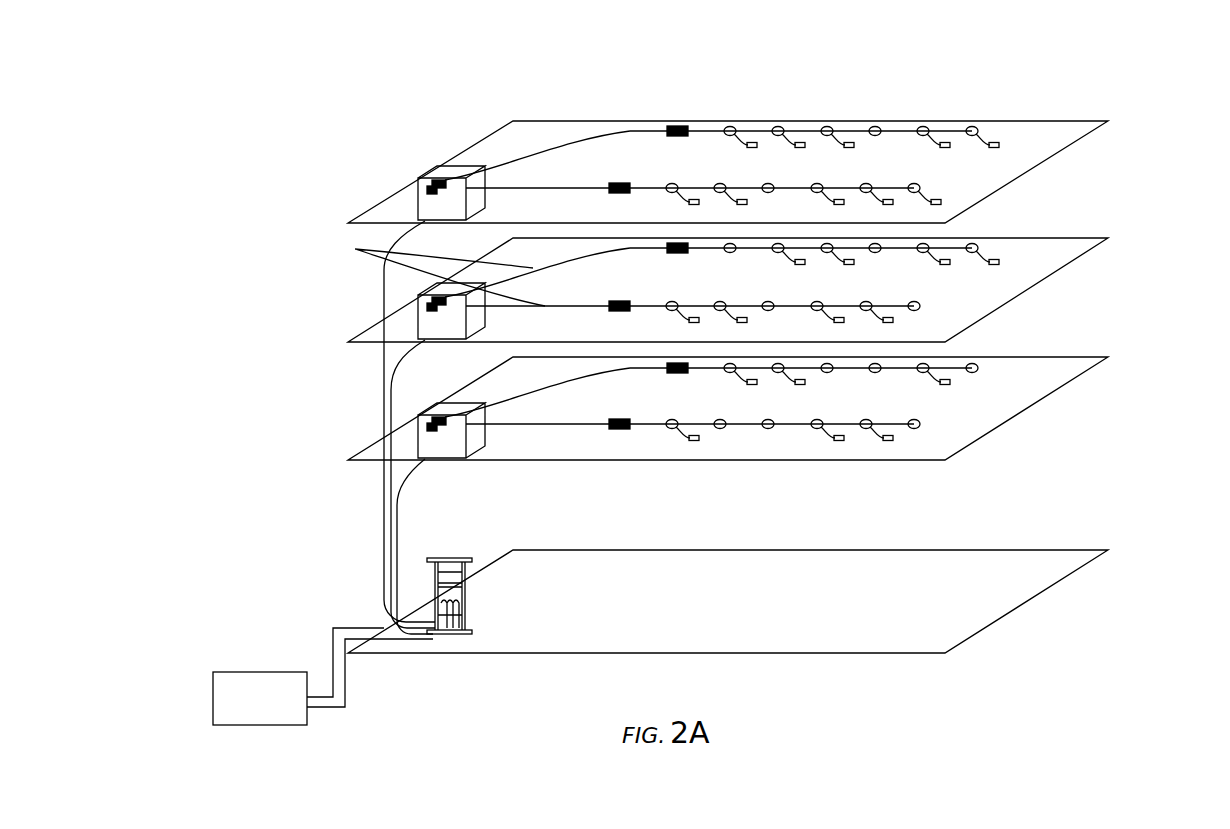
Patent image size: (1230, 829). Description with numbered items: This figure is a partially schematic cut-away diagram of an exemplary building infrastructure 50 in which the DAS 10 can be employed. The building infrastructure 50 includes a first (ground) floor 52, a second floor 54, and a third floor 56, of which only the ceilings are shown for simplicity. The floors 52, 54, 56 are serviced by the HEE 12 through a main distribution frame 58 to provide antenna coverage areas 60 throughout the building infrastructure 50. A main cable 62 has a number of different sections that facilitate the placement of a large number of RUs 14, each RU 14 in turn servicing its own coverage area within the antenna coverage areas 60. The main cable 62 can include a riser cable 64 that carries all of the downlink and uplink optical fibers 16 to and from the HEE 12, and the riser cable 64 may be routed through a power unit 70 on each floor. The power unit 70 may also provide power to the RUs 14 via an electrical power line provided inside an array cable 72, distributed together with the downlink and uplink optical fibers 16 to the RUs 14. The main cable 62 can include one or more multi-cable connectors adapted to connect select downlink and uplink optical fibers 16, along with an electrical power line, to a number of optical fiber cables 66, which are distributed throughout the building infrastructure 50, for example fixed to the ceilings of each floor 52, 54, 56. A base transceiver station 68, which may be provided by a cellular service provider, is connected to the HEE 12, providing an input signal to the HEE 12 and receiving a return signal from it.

The DAS 10 is at (842, 57).
The HEE 12 is at (471, 622).
The RUs 14 is at (945, 146).
The downlink and uplink optical fibers 16 is at (563, 145).
The building infrastructure 50 is at (722, 342).
The first (ground) floor 52 is at (1062, 328).
The second floor 54 is at (1070, 193).
The third floor 56 is at (1097, 96).
The main distribution frame 58 is at (450, 625).
The antenna coverage areas 60 is at (925, 232).
The main cable 62 is at (345, 460).
The riser cable 64 is at (385, 522).
The optical fiber cables 66 is at (436, 272).
The base transceiver station (BTS) 68 is at (252, 725).
The power unit 70 is at (432, 178).
The array cable 72 is at (617, 128).